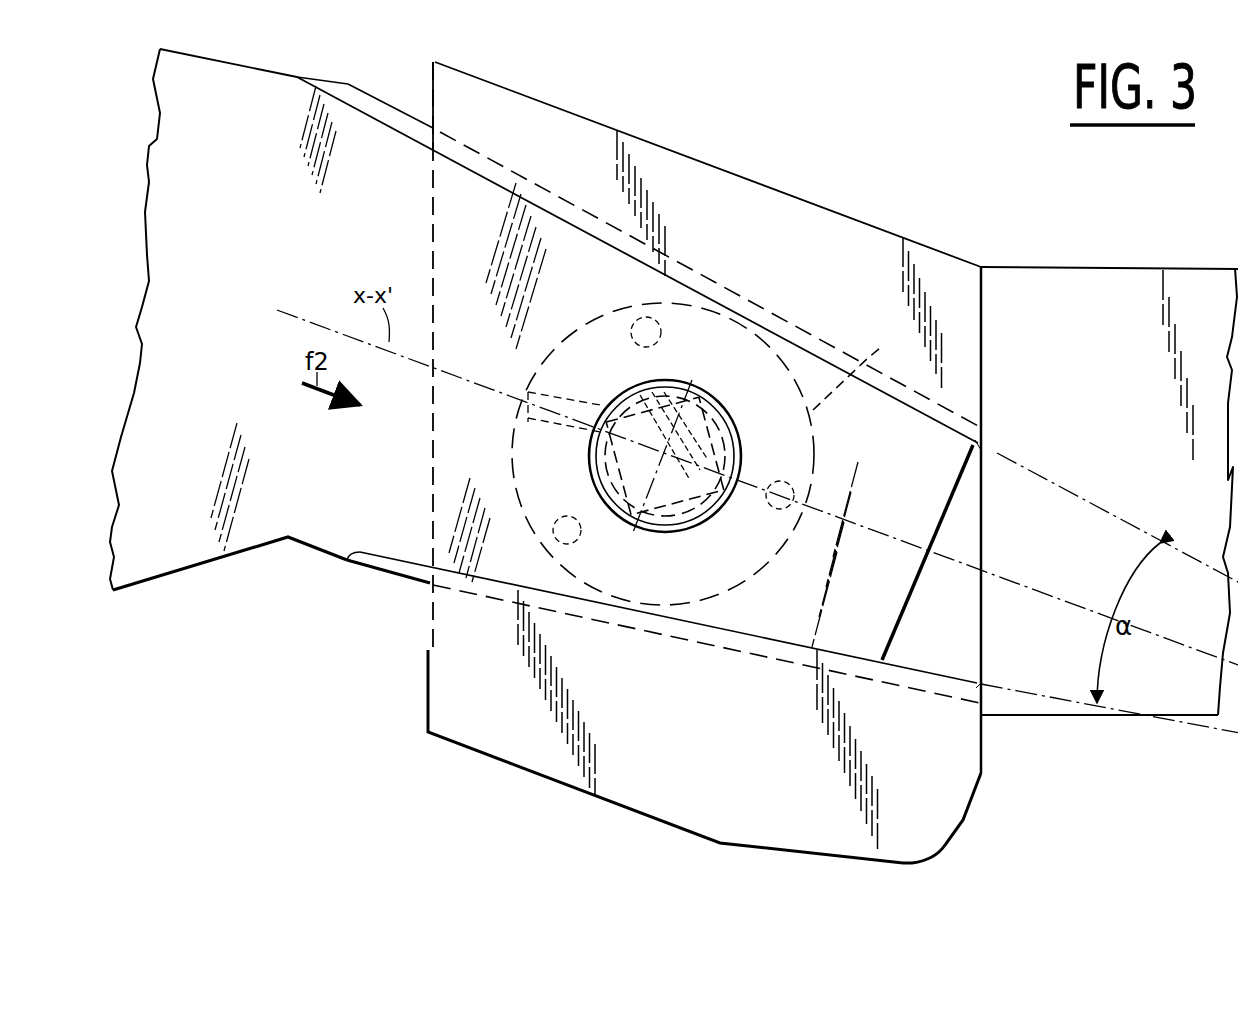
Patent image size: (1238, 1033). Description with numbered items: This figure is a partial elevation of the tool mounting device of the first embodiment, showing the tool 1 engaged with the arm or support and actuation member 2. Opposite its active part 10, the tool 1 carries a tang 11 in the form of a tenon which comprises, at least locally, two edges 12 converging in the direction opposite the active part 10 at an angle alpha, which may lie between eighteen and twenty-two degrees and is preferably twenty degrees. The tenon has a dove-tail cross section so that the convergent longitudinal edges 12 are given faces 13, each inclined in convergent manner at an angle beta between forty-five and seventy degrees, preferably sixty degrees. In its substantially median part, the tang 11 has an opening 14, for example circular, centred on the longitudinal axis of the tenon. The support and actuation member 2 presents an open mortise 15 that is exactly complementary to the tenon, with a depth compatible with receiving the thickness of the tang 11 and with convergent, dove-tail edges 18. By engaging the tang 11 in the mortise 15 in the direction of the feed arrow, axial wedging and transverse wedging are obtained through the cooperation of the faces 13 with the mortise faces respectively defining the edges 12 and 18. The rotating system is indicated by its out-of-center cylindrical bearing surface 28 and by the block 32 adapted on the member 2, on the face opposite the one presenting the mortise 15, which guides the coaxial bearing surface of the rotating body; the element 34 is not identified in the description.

The tool 1 is at (250, 222).
The arm or support and actuation member 2 is at (903, 238).
The active part 10 is at (165, 555).
The tang 11 is at (892, 607).
The edges 12 is at (401, 110).
The faces 13 is at (361, 98).
The opening 14 is at (592, 465).
The open mortise 15 is at (942, 647).
The edges 18 is at (973, 446).
The cylindrical bearing surface 28 is at (618, 404).
The block 32 is at (866, 365).
The seat 34 is at (567, 344).